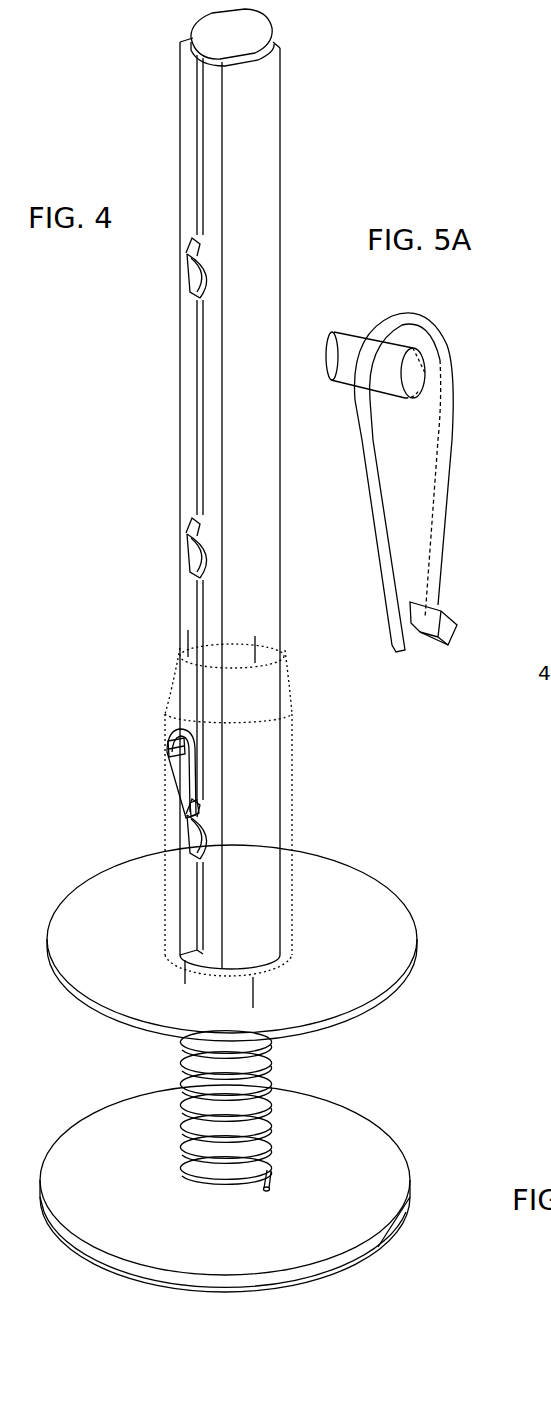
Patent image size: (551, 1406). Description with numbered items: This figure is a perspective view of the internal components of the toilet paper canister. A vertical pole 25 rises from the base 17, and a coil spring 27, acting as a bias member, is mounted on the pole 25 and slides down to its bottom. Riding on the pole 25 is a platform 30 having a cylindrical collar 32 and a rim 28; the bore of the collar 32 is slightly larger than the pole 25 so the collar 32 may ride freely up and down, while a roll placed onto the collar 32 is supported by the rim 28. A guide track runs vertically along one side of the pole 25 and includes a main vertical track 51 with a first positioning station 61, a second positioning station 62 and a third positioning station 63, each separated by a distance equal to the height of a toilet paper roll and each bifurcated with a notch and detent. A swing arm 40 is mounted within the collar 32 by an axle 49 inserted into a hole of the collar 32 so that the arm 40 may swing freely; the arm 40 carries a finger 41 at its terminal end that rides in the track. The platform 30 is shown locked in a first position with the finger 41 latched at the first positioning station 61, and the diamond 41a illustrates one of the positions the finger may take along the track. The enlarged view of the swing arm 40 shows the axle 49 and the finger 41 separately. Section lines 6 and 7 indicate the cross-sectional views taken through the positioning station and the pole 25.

In FIG. 4, the pole 25 is at (268, 130).
In FIG. 4, the main vertical track 51 is at (198, 395).
In FIG. 4, the third positioning station 63 is at (186, 272).
In FIG. 4, the second positioning station 62 is at (184, 563).
In FIG. 4, the first positioning station 61 is at (184, 851).
In FIG. 4, the section line 6 is at (250, 638).
In FIG. 4, the section line 7 is at (198, 628).
In FIG. 4, the collar 32 is at (168, 672).
In FIG. 4, the platform 30 is at (296, 770).
In FIG. 4, the swing arm 40 is at (180, 778).
In FIG. 5A, the swing arm 40 is at (415, 448).
In FIG. 4, the axle 49 is at (166, 746).
In FIG. 5A, the axle 49 is at (350, 342).
In FIG. 4, the finger position 41a is at (198, 812).
In FIG. 5A, the finger 41 is at (447, 628).
In FIG. 4, the rim 28 is at (100, 888).
In FIG. 4, the coil spring 27 is at (267, 1080).
In FIG. 4, the base 17 is at (110, 1112).